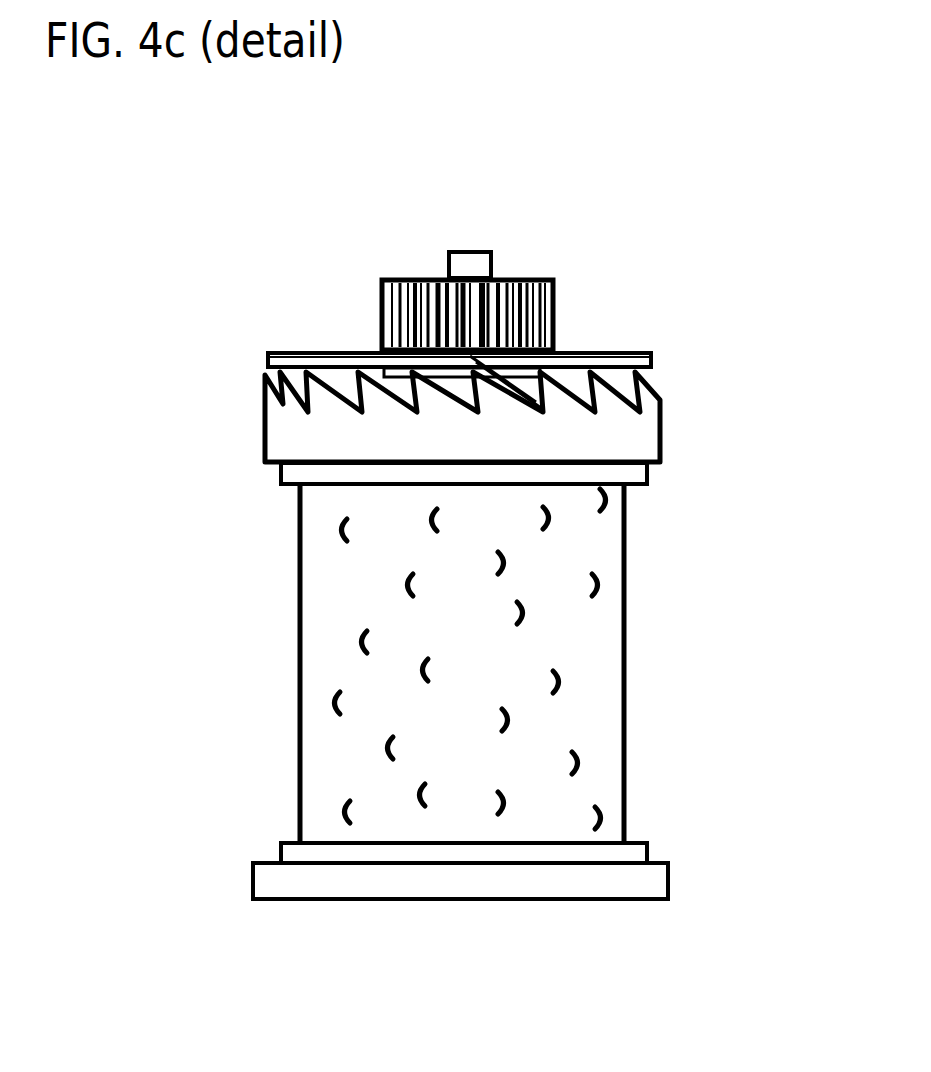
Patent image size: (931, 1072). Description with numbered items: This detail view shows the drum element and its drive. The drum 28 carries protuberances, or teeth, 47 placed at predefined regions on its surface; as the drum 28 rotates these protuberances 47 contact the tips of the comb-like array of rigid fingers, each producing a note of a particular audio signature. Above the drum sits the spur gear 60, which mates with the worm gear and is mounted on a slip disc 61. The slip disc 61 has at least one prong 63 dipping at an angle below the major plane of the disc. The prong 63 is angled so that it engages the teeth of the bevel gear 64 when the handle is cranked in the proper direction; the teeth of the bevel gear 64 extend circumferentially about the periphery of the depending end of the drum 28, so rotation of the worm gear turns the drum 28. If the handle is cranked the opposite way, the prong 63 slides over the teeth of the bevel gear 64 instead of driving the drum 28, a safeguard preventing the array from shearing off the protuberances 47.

The spur gear 60 is at (495, 303).
The slip disc 61 is at (292, 360).
The prong 63 is at (495, 392).
The bevel gear 64 is at (355, 437).
The drum 28 is at (482, 655).
The protuberances 47 is at (377, 745).